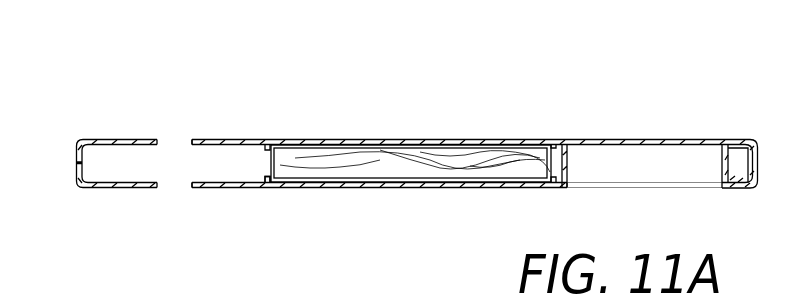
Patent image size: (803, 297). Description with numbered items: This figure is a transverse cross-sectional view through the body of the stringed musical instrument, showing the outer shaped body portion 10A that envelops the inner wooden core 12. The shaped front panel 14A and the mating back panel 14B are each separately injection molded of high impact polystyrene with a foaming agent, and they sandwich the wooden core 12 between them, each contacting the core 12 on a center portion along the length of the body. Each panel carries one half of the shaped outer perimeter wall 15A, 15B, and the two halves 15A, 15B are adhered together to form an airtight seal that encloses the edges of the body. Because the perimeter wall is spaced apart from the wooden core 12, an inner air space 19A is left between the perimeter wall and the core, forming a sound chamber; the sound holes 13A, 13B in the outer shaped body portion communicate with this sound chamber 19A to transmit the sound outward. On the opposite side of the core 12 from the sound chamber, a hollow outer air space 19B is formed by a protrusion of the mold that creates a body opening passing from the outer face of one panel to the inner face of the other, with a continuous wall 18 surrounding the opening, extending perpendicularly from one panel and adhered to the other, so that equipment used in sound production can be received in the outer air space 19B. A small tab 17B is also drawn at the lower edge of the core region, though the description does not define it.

The shaped body portion 10A is at (399, 163).
The wooden core 12 is at (435, 167).
The sound hole 13A is at (180, 138).
The sound hole 13B is at (180, 185).
The shaped front panel 14A is at (98, 142).
The mating back panel 14B is at (123, 188).
The shaped outer perimeter wall 15A is at (760, 146).
The shaped outer perimeter wall 15B is at (758, 180).
The lower tab 17B is at (267, 178).
The continuous wall 18 is at (722, 160).
The inner air space 19A is at (110, 160).
The hollow outer air space 19B is at (642, 167).